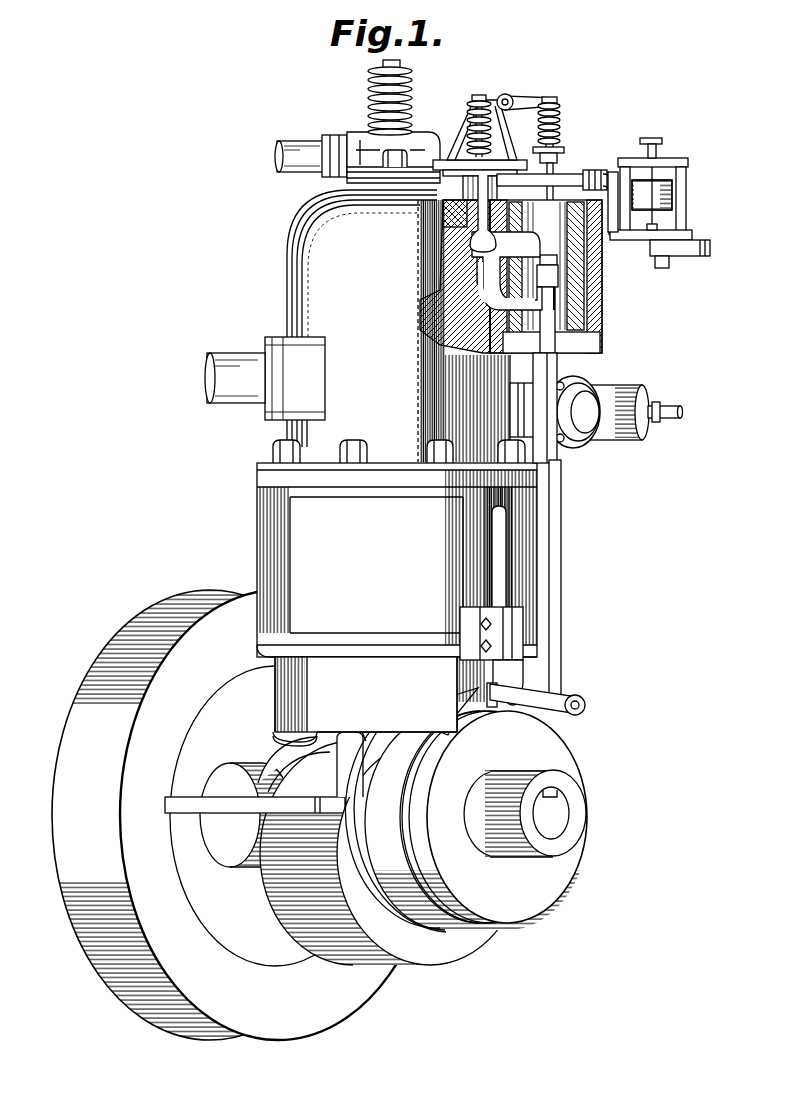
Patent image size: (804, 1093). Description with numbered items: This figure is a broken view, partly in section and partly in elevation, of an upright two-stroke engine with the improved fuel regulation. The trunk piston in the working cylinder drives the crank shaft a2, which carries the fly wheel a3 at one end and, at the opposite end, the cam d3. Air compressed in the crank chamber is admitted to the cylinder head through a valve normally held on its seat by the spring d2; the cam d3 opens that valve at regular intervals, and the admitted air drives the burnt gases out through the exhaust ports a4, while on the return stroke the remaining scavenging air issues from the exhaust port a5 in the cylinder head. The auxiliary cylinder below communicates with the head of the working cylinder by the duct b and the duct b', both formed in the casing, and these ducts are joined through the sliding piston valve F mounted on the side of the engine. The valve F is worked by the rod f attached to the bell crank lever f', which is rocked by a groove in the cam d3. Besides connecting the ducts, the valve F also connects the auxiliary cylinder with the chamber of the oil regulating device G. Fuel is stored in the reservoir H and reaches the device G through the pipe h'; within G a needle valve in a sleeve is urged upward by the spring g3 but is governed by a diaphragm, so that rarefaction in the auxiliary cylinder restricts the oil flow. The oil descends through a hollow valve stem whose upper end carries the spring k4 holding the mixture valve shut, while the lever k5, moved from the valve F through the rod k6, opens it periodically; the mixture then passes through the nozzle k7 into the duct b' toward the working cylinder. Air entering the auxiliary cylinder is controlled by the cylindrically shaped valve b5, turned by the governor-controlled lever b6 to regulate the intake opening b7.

The crank shaft a2 is at (562, 814).
The fly wheel a3 is at (244, 815).
The exhaust ports a4 is at (207, 378).
The exhaust port a5 is at (279, 152).
The duct b is at (509, 306).
The duct b' is at (453, 242).
The cylindrically shaped valve b5 is at (595, 415).
The lever b6 is at (660, 402).
The intake opening b7 is at (577, 413).
The spring d2 is at (412, 96).
The cam d3 is at (441, 776).
The rod f is at (564, 526).
The bell crank lever f' is at (551, 693).
The spring g3 is at (473, 151).
The oil regulating and controlling device G is at (493, 130).
The pipe h' is at (556, 191).
The reservoir H is at (674, 174).
The spring k4 is at (467, 109).
The lever k5 is at (524, 97).
The rod k6 is at (556, 168).
The nozzle k7 is at (468, 252).
The piston valve F is at (590, 321).